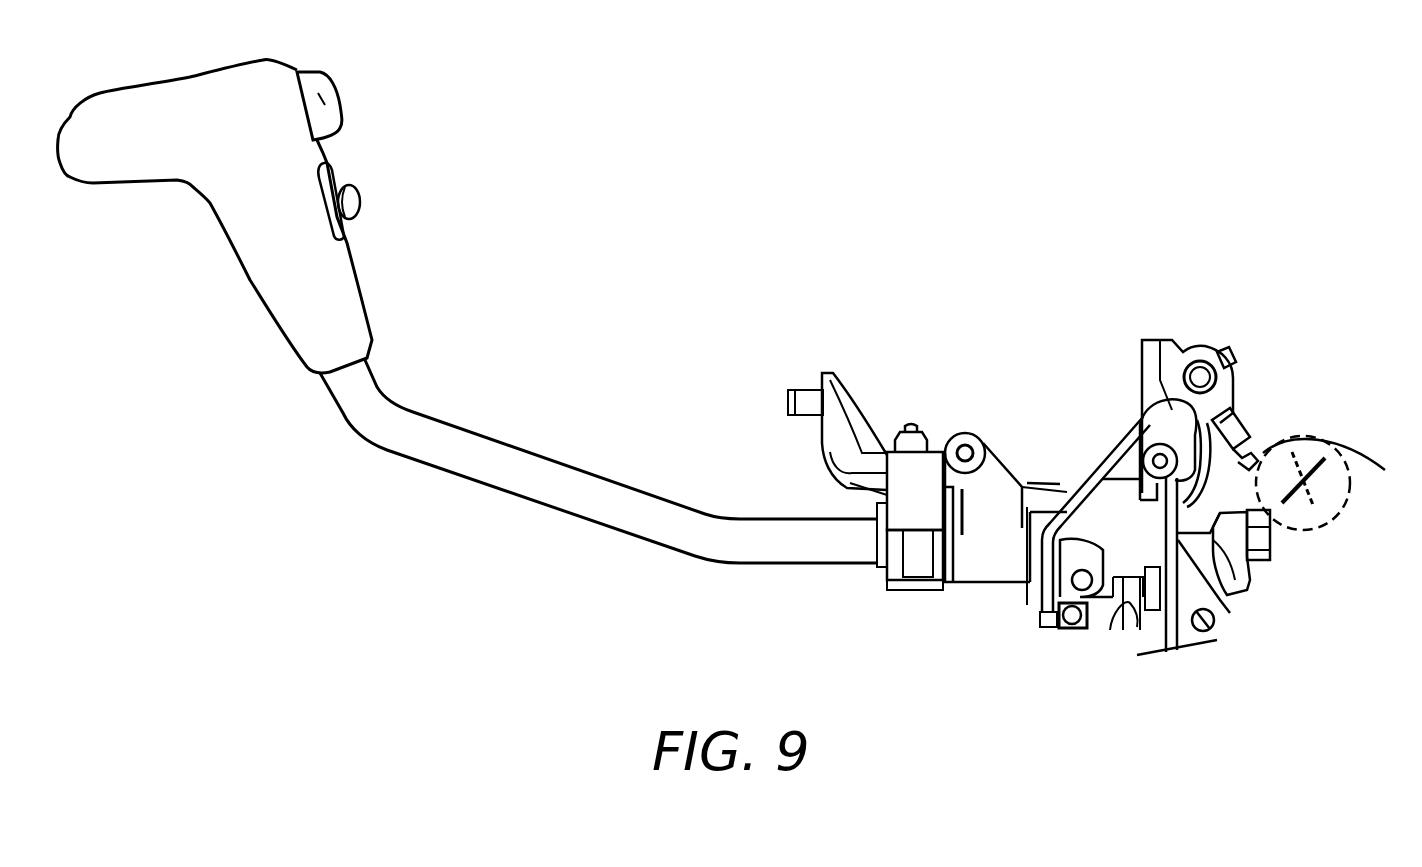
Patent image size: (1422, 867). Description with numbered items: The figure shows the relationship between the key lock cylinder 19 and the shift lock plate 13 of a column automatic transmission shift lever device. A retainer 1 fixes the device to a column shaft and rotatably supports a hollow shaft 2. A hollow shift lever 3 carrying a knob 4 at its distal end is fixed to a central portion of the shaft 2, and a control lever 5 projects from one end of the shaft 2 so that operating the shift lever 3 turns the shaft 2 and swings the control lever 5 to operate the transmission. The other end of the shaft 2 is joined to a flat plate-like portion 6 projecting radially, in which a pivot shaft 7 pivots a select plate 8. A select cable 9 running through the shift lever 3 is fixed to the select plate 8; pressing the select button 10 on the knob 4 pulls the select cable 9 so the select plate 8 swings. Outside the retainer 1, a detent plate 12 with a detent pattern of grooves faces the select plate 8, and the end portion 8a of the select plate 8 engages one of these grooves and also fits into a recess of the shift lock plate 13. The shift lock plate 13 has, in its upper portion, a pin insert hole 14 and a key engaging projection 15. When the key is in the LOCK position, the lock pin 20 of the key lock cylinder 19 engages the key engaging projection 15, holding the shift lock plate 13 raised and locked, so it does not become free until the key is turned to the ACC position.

The retainer 1 is at (992, 562).
The shaft 2 is at (877, 537).
The shift lever 3 is at (433, 433).
The knob 4 is at (337, 291).
The control lever 5 is at (833, 377).
The flat plate-like portion 6 is at (1187, 633).
The pivot shaft 7 is at (1210, 627).
The select plate 8 is at (1247, 583).
The end portion of the select plate 8a is at (1127, 630).
The select cable 9 is at (1270, 553).
The select button 10 is at (325, 100).
The detent plate 12 is at (1120, 603).
The shift lock plate 13 is at (1221, 367).
The pin insert hole 14 is at (1200, 362).
The key engaging projection 15 is at (1238, 437).
The key lock cylinder 19 is at (1343, 508).
The lock pin 20 is at (1340, 465).